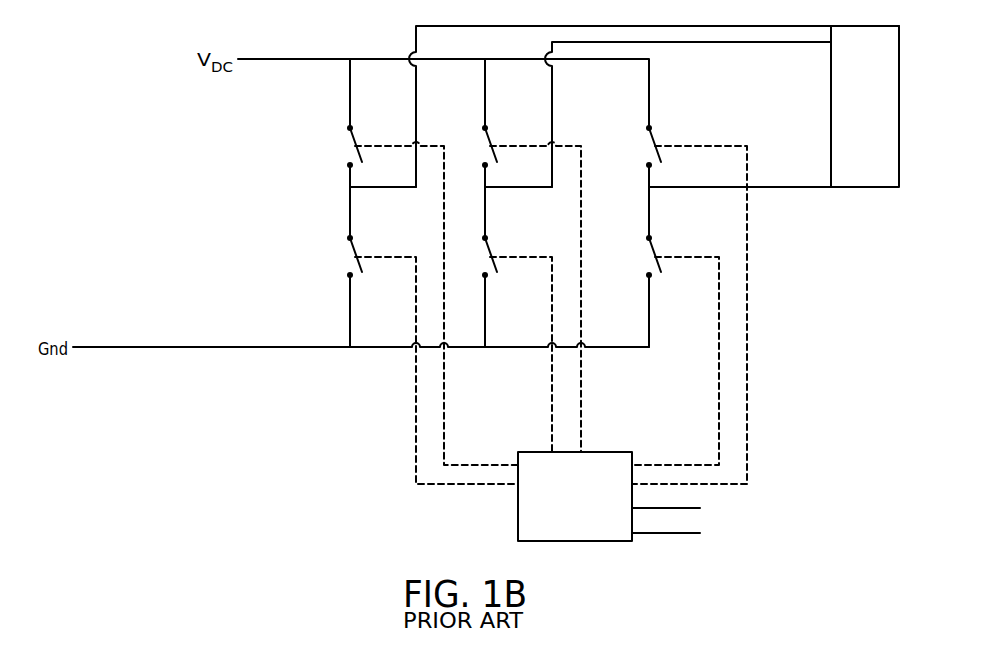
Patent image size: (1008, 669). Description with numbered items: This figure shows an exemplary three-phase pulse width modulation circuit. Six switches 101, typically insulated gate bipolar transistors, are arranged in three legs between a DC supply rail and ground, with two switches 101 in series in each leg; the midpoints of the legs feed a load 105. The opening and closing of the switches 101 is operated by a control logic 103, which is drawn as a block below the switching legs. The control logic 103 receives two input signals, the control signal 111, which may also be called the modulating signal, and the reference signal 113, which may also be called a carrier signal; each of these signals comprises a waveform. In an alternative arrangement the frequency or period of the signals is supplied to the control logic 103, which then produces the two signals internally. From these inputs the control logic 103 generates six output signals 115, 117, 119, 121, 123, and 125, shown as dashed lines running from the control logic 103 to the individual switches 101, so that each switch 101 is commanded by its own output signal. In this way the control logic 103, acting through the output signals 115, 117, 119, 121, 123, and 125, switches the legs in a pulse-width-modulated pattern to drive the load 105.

The switch 101 is at (356, 139).
The control logic 103 is at (600, 541).
The load 105 is at (870, 187).
The control signal 111 is at (734, 510).
The reference signal 113 is at (706, 535).
The output signal 115 is at (445, 397).
The output signal 117 is at (415, 395).
The output signal 119 is at (552, 437).
The output signal 121 is at (581, 437).
The output signal 123 is at (748, 395).
The output signal 125 is at (718, 395).